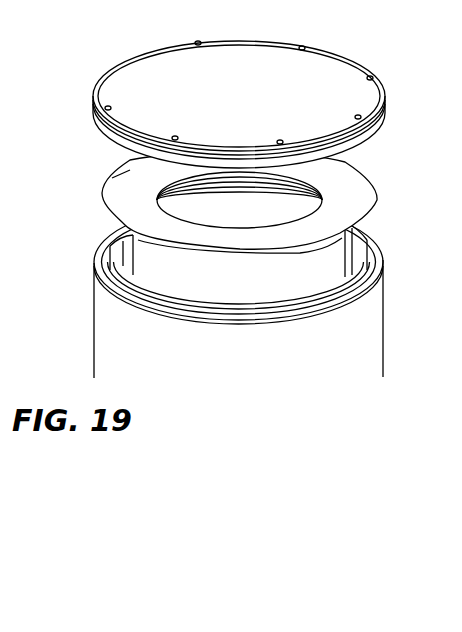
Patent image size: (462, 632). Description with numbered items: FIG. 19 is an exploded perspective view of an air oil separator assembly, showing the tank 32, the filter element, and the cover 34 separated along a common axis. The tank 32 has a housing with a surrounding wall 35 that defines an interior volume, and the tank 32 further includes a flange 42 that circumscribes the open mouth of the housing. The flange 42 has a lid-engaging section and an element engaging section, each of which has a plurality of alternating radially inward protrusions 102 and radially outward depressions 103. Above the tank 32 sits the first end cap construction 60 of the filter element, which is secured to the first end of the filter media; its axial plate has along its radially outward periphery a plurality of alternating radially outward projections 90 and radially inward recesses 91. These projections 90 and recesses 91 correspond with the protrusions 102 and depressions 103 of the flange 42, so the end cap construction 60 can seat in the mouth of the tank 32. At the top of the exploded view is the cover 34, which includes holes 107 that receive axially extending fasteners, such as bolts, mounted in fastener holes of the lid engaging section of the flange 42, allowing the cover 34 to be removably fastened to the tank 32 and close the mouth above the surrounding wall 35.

The tank 32 is at (383, 344).
The cover 34 is at (337, 72).
The surrounding wall 35 is at (94, 335).
The flange 42 is at (383, 270).
The first end cap construction 60 is at (360, 200).
The radially outward projections 90 is at (105, 193).
The radially inward recesses 91 is at (130, 170).
The radially inward protrusions 102 is at (365, 253).
The radially outward depressions 103 is at (340, 288).
The holes 107 is at (120, 68).